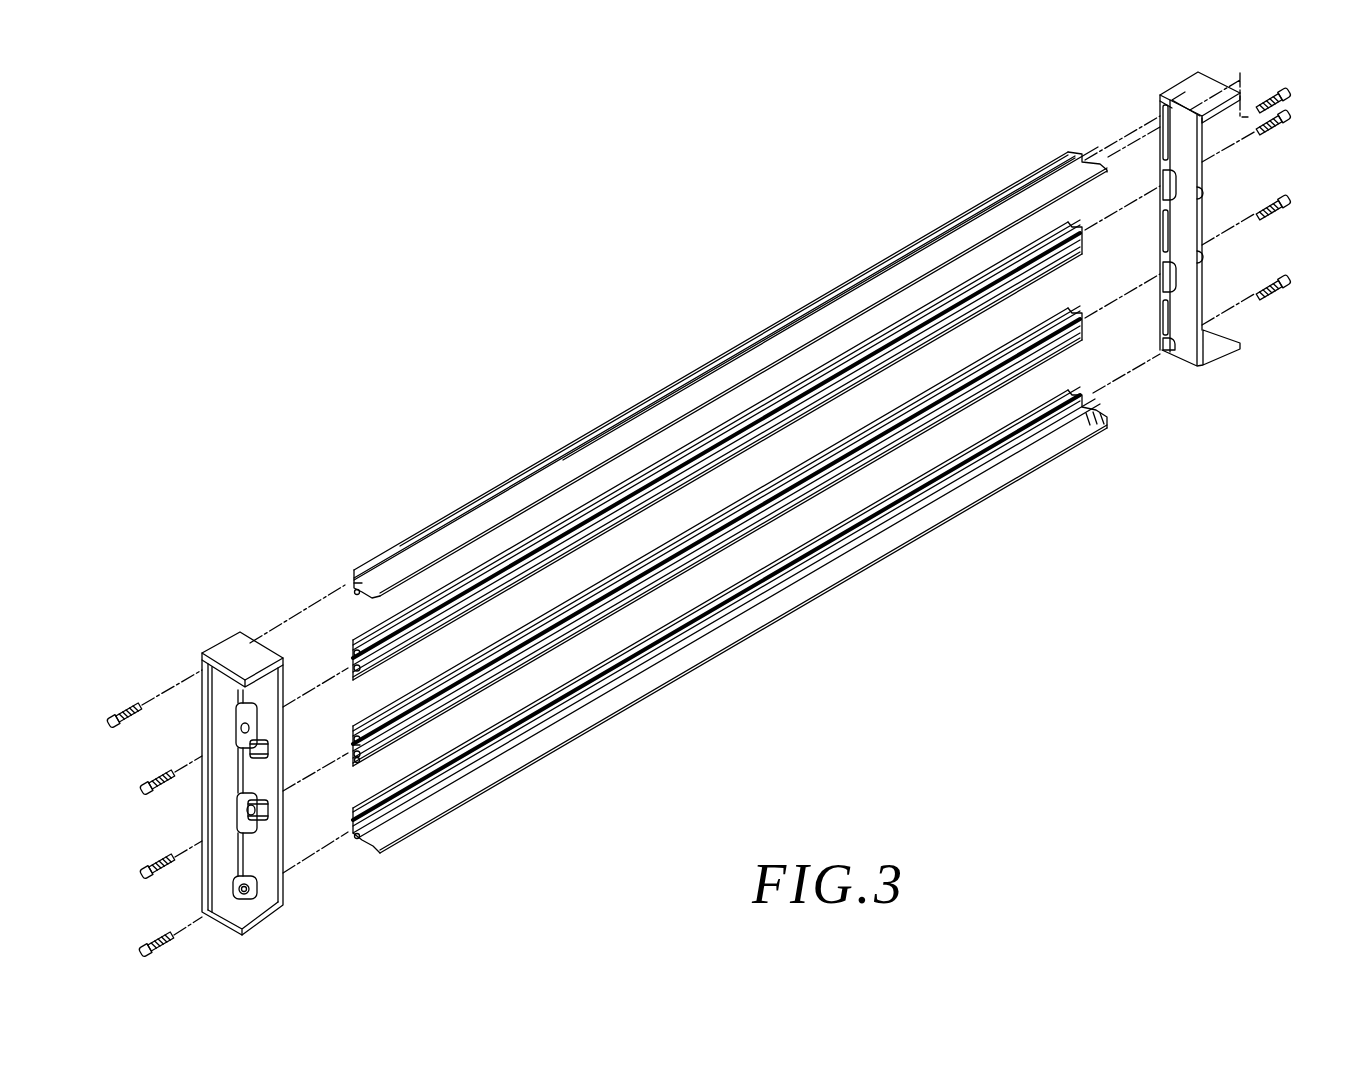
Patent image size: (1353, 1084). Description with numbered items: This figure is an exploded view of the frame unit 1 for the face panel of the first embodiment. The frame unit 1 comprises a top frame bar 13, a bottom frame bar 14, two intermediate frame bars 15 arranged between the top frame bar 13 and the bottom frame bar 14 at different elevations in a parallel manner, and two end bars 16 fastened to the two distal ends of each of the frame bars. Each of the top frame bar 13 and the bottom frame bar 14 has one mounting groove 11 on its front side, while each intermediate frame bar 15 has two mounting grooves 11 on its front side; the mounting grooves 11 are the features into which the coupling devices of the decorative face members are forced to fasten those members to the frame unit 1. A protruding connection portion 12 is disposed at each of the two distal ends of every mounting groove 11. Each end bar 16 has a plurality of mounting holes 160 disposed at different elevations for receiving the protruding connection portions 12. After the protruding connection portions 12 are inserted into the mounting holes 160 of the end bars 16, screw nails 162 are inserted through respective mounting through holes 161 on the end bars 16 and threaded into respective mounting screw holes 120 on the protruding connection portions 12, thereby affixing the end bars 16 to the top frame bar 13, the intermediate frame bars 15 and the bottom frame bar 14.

The frame unit 1 is at (619, 360).
The mounting groove 11 is at (355, 653).
The protruding connection portion 12 is at (353, 586).
The mounting screw hole 120 is at (352, 591).
The top frame bar 13 is at (477, 509).
The bottom frame bar 14 is at (478, 782).
The intermediate frame bar 15 is at (852, 360).
The end bar 16 is at (230, 646).
The mounting hole 160 is at (1165, 264).
The mounting through hole 161 is at (238, 729).
The screw nail 162 is at (125, 716).